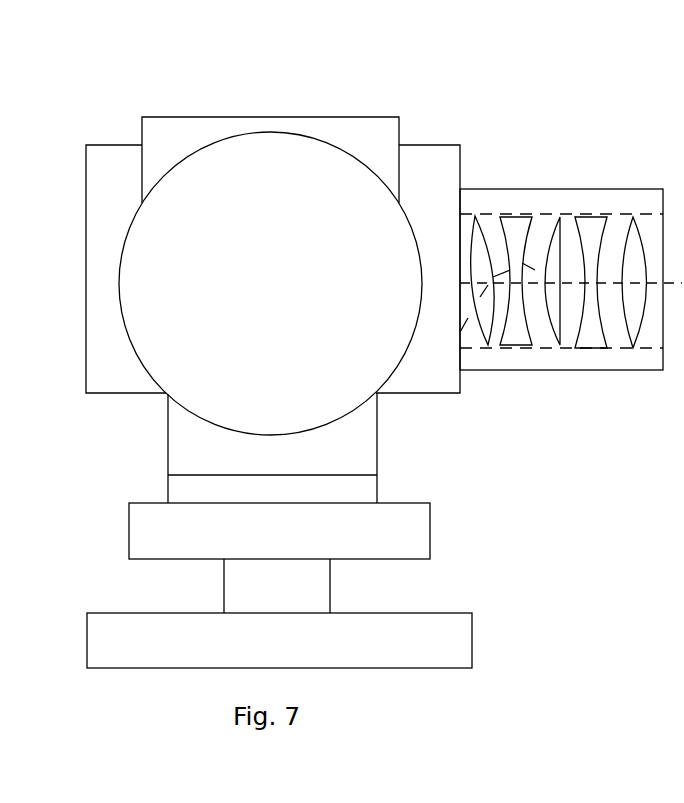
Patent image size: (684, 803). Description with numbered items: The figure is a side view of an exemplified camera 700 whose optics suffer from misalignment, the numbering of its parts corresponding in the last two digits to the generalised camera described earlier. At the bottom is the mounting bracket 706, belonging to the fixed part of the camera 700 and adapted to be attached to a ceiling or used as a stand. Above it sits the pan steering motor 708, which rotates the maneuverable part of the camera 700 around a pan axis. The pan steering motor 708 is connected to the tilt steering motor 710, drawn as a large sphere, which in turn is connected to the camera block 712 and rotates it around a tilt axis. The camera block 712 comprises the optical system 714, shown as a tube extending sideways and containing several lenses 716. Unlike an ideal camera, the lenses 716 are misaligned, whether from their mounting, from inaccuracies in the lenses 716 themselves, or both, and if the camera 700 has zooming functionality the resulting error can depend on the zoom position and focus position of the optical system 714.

The camera 700 is at (318, 90).
The mounting bracket 706 is at (293, 653).
The pan steering motor 708 is at (293, 543).
The tilt steering motor 710 is at (293, 398).
The camera block 712 is at (125, 378).
The optical system 714 is at (518, 204).
The lenses 716 is at (586, 218).